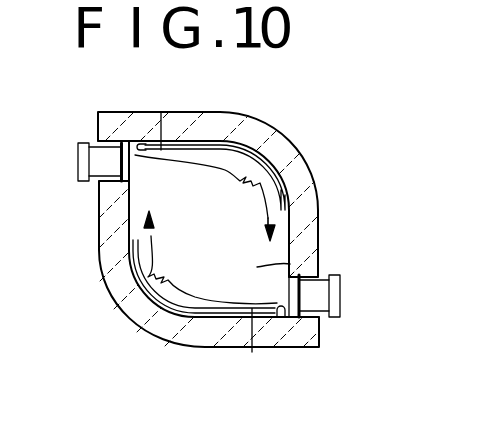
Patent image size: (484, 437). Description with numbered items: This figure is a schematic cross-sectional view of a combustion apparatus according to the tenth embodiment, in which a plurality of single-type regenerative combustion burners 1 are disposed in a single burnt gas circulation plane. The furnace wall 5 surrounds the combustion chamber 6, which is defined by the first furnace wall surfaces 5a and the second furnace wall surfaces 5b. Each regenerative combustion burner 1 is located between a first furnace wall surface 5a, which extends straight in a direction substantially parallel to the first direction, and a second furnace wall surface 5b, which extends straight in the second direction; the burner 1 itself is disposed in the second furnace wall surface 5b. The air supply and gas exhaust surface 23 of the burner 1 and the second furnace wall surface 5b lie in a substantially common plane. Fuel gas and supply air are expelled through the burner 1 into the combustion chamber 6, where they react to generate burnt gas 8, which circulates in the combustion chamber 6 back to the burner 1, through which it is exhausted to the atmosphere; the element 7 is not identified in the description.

The regenerative combustion burner 1 is at (100, 153).
The furnace wall 5 is at (250, 131).
The first furnace wall surface 5a is at (136, 143).
The second furnace wall surface 5b is at (133, 202).
The combustion chamber 6 is at (290, 264).
The plate 7 is at (162, 148).
The burnt gas 8 is at (143, 238).
The air supply and gas exhaust surface 23 is at (129, 172).